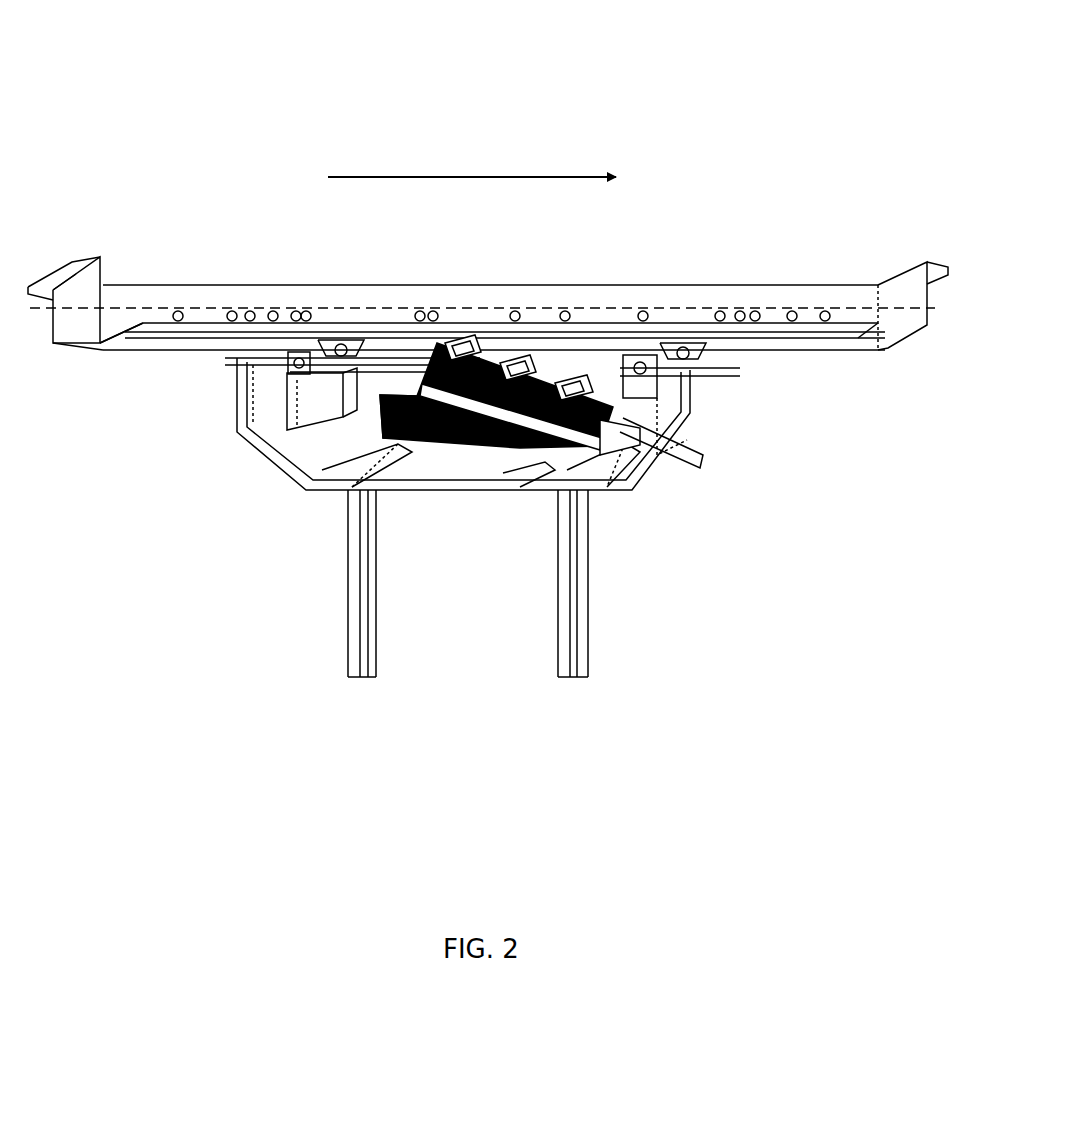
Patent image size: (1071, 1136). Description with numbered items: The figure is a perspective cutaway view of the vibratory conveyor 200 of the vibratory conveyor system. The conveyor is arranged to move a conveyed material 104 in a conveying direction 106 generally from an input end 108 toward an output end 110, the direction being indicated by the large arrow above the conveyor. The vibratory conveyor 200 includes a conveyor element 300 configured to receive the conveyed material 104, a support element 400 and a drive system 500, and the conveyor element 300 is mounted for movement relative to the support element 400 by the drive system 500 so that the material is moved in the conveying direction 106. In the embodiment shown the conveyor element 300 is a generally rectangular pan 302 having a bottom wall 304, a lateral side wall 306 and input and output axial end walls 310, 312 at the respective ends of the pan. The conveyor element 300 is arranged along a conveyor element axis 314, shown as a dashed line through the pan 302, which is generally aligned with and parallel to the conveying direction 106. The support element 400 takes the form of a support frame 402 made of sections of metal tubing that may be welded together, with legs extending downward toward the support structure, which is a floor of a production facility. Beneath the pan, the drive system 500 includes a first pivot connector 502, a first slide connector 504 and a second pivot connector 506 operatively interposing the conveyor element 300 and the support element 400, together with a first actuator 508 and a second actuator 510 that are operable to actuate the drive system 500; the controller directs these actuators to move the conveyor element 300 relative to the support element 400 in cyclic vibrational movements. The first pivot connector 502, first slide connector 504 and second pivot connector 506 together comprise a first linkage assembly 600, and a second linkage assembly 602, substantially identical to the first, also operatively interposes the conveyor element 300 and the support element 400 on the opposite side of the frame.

The vibratory conveyor 200 is at (142, 97).
The conveying direction 106 is at (485, 176).
The conveyed material 104 is at (514, 311).
The input end 108 is at (58, 265).
The output end 110 is at (935, 262).
The conveyor element 300 is at (488, 293).
The pan 302 is at (385, 298).
The bottom wall 304 is at (798, 346).
The left lateral side wall 306 is at (677, 300).
The input axial end wall 310 is at (73, 312).
The output axial end wall 312 is at (903, 290).
The conveyor element axis 314 is at (115, 302).
The support element 400 is at (346, 573).
The support frame 402 is at (634, 474).
The drive system 500 is at (455, 457).
The first pivot connector 502 is at (340, 343).
The first slide connector 504 is at (300, 382).
The second pivot connector 506 is at (302, 362).
The first actuator 508 is at (546, 392).
The second actuator 510 is at (437, 420).
The first linkage assembly 600 is at (283, 408).
The second linkage assembly 602 is at (697, 399).